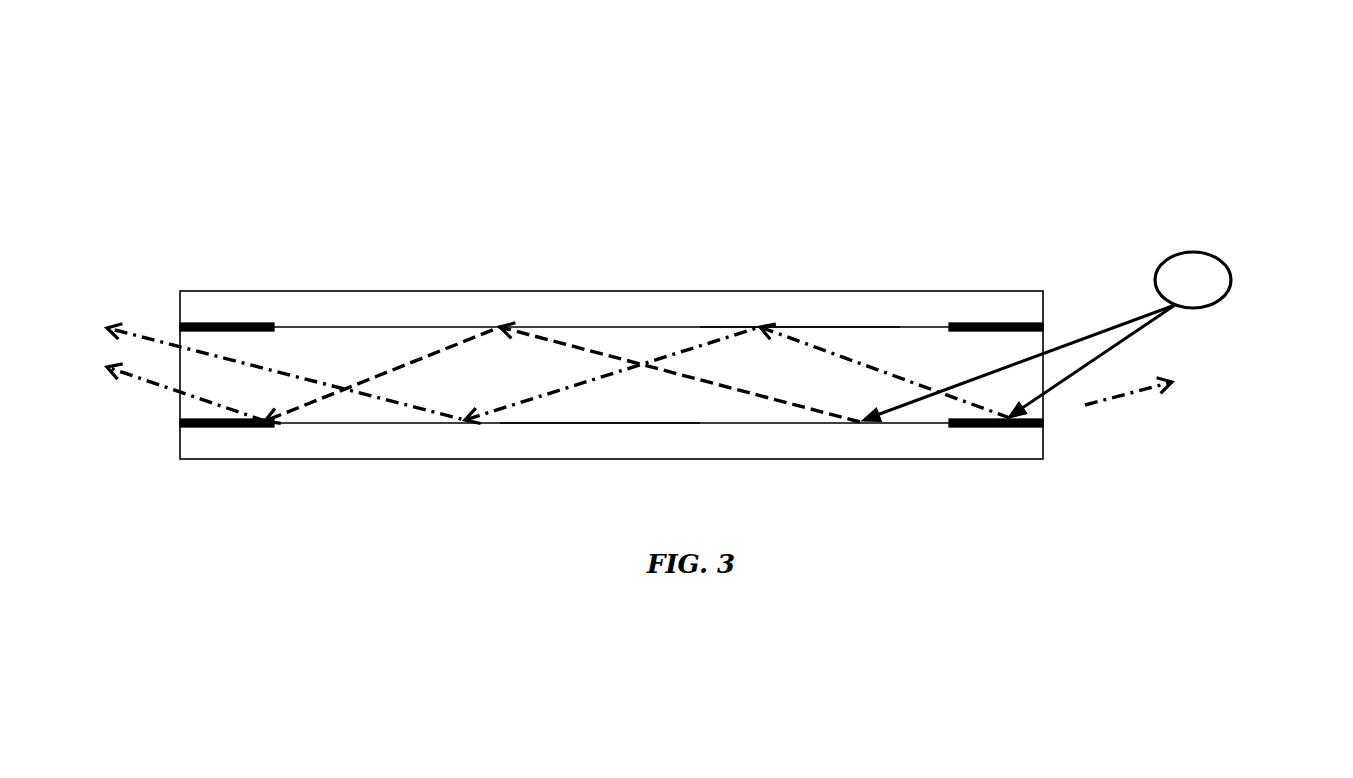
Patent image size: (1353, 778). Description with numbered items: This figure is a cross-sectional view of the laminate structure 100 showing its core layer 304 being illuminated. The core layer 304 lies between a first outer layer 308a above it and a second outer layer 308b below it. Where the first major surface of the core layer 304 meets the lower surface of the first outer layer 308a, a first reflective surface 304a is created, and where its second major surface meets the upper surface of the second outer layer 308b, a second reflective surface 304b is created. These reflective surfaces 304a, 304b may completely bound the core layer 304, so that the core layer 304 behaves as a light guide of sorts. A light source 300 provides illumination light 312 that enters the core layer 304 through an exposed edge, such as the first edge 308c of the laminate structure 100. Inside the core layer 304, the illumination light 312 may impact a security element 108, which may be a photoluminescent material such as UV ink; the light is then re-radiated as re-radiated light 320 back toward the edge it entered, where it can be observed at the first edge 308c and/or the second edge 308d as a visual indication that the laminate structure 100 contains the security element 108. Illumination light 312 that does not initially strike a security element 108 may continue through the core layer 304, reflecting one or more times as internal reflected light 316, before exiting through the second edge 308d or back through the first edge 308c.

The laminate structure 100 is at (456, 237).
The security element 108 is at (218, 428).
The light source 300 is at (1194, 251).
The core layer 304 is at (637, 343).
The first reflective surface 304a is at (839, 331).
The second reflective surface 304b is at (629, 421).
The first outer layer 308a is at (873, 328).
The second outer layer 308b is at (743, 423).
The first edge 308c is at (1040, 335).
The second edge 308d is at (178, 386).
The illumination light 312 is at (968, 382).
The internal reflected light 316 is at (575, 348).
The re-radiated light 320 is at (120, 323).